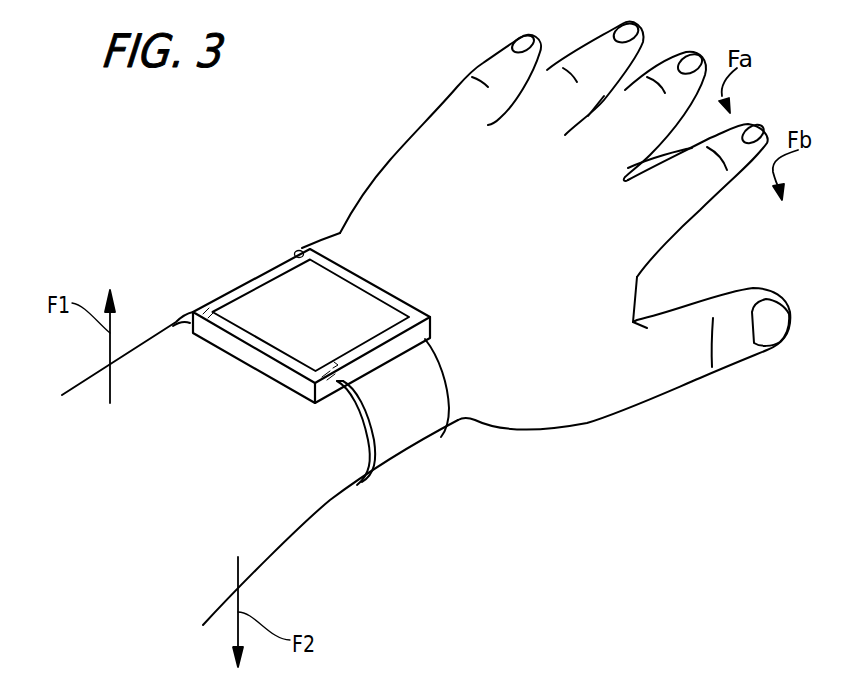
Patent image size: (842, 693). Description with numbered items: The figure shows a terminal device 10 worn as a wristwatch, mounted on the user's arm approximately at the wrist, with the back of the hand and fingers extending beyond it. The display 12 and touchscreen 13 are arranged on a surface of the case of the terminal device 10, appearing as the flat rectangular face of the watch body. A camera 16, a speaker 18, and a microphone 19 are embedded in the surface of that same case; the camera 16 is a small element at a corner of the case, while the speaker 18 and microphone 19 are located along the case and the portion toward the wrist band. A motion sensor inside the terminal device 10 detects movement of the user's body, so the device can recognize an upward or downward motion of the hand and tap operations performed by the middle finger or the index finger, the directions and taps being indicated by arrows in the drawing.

The terminal device 10 is at (363, 375).
The display 12 is at (378, 383).
The touchscreen 13 is at (340, 333).
The camera 16 is at (300, 250).
The speaker 18 is at (220, 300).
The microphone 19 is at (346, 374).